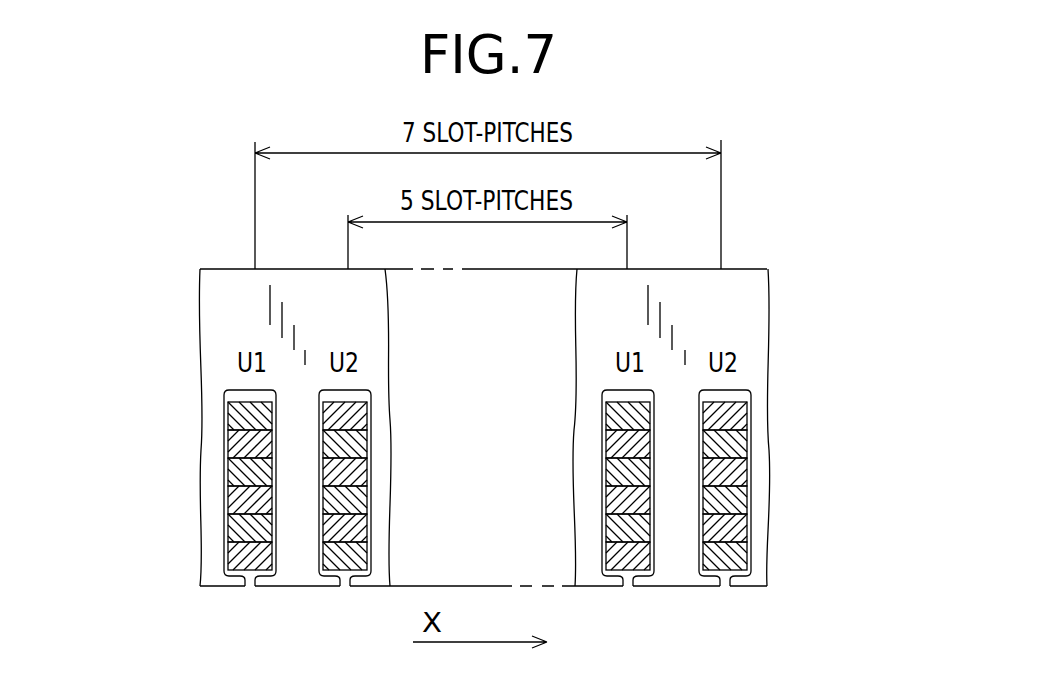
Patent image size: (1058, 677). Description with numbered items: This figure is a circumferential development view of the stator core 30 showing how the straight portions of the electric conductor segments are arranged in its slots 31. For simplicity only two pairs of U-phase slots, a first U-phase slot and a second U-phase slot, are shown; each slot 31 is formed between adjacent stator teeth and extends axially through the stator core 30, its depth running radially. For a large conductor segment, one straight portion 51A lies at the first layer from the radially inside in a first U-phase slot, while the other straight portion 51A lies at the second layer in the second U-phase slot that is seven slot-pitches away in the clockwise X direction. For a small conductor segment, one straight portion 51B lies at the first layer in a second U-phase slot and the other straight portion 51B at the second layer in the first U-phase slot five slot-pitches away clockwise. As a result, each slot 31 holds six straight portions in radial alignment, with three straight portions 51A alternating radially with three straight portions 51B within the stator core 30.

The stator core 30 is at (745, 254).
The slot 31 is at (260, 553).
The straight portion of large electric conductor segment 51A is at (224, 444).
The straight portion of small electric conductor segment 51B is at (224, 416).